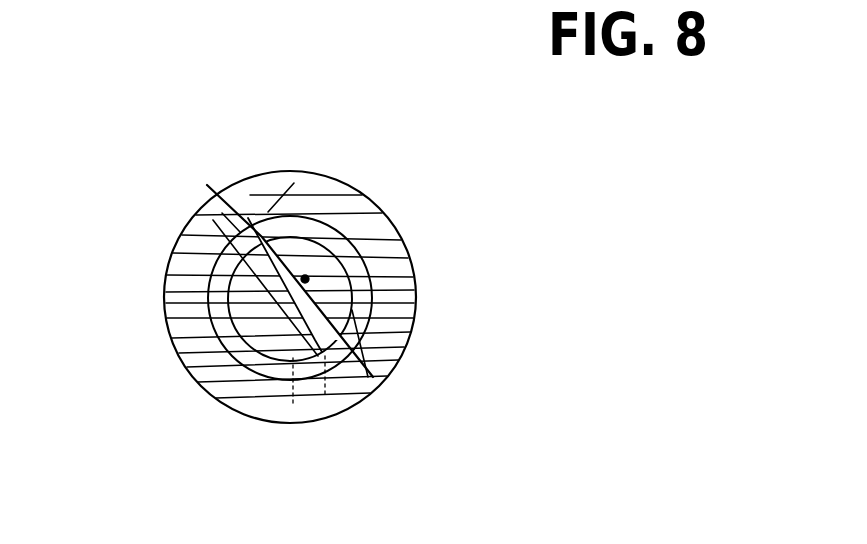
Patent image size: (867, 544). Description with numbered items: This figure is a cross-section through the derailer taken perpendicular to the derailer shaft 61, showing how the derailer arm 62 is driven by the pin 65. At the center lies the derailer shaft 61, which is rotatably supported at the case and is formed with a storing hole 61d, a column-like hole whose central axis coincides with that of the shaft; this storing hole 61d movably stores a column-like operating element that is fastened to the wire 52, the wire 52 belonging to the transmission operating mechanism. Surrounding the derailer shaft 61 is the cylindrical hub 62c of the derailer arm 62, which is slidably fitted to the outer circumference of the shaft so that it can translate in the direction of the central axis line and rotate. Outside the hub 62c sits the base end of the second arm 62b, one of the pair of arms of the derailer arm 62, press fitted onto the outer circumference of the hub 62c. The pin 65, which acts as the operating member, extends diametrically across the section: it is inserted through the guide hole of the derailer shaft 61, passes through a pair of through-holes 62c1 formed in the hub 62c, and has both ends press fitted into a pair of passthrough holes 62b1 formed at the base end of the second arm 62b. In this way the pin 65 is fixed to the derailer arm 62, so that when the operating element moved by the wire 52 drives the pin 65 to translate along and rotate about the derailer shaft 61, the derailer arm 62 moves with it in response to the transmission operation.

The derailer arm 62 is at (425, 247).
The second arm 62b is at (402, 318).
The passthrough holes 62b1 is at (236, 198).
The cylindrical hub 62c is at (262, 380).
The through-holes 62c1 is at (220, 215).
The derailer shaft 61 is at (226, 365).
The storing hole 61d is at (250, 297).
The pin 65 is at (205, 180).
The wire 52 is at (307, 279).